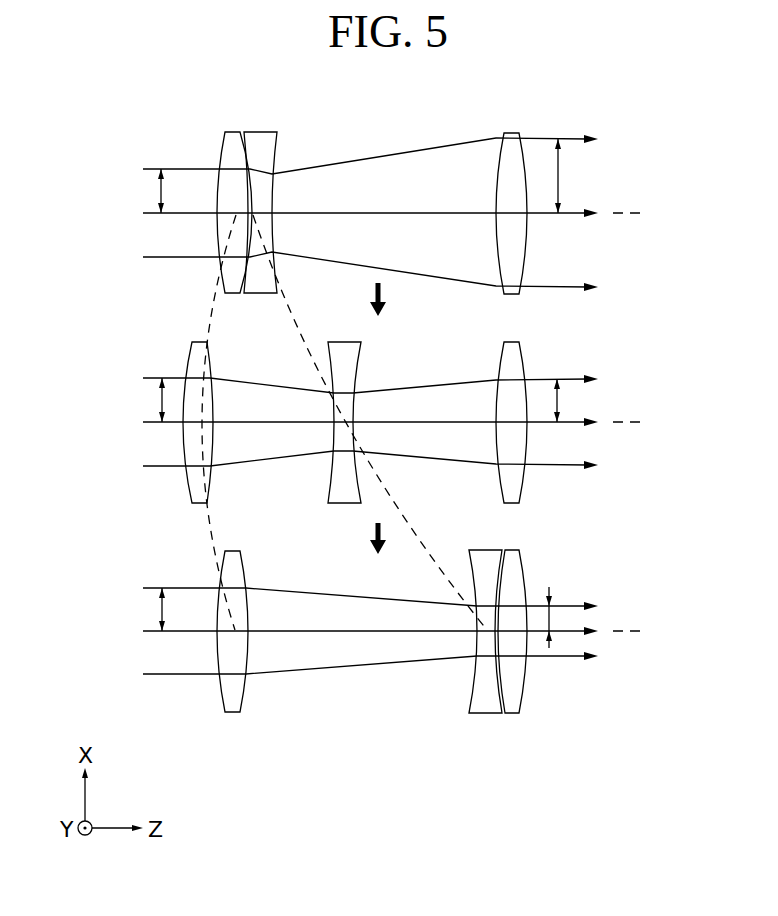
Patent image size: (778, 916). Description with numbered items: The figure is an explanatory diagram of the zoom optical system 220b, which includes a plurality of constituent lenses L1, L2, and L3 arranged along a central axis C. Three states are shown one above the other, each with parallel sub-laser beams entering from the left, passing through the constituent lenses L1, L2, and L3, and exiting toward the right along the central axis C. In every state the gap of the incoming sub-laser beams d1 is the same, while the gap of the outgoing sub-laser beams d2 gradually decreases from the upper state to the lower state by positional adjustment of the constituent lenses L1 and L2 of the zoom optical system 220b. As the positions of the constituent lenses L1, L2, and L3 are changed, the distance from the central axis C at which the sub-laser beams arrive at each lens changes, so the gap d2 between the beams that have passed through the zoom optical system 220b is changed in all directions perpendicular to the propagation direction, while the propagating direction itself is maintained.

The zoom optical system 220b is at (553, 91).
The constituent lens L1 is at (190, 408).
The constituent lens L2 is at (344, 408).
The constituent lens L3 is at (511, 408).
The gap of the incoming sub-laser beams d1 is at (163, 400).
The gap of the outgoing sub-laser beams d2 is at (566, 393).
The central axis C is at (643, 423).